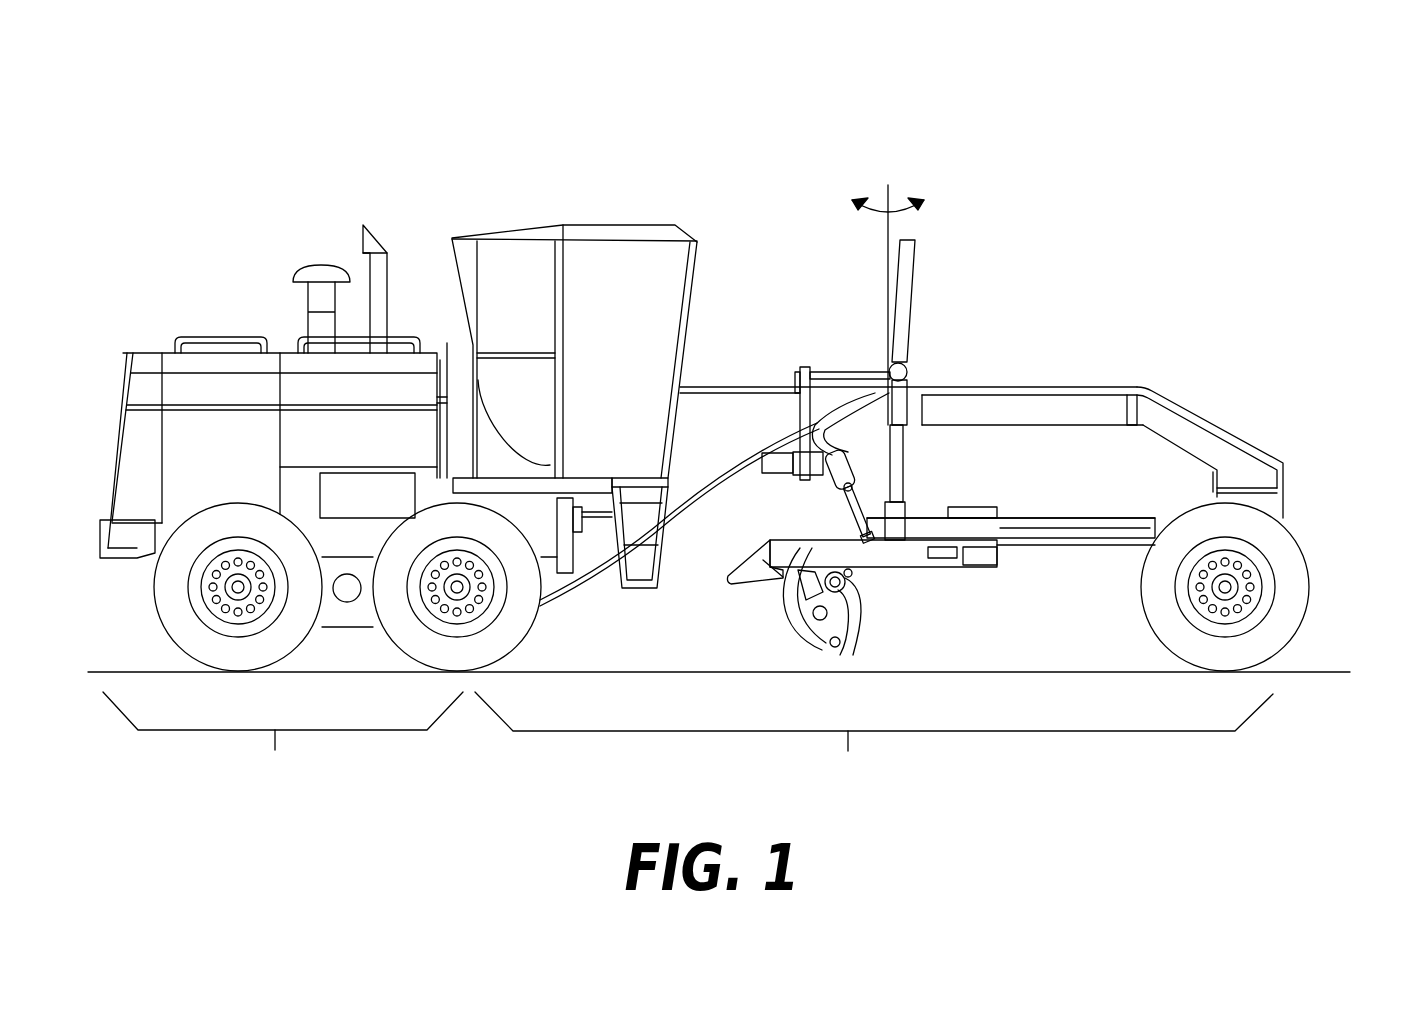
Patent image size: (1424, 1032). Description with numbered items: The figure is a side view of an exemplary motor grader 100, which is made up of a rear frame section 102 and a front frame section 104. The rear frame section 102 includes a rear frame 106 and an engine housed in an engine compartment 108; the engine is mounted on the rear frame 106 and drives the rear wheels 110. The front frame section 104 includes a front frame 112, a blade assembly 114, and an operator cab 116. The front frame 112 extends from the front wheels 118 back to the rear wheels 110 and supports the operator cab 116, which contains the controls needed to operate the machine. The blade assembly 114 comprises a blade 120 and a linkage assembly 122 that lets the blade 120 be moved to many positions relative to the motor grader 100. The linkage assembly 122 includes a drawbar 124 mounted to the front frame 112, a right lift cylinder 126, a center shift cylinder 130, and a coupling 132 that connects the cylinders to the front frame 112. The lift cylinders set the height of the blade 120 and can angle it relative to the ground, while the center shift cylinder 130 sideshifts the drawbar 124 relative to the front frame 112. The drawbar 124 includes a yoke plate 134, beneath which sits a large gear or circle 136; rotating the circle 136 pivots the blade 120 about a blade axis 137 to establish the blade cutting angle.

The motor grader 100 is at (1090, 220).
The rear frame section 102 is at (283, 741).
The front frame section 104 is at (874, 741).
The rear frame 106 is at (328, 600).
The engine compartment 108 is at (173, 433).
The rear wheels 110 is at (168, 607).
The front frame 112 is at (1066, 402).
The blade assembly 114 is at (942, 577).
The operator cab 116 is at (697, 263).
The front wheels 118 is at (1312, 603).
The blade 120 is at (853, 638).
The linkage assembly 122 is at (957, 489).
The drawbar 124 is at (1110, 550).
The right lift cylinder 126 is at (913, 317).
The center shift cylinder 130 is at (842, 498).
The coupling 132 is at (833, 407).
The yoke plate 134 is at (917, 530).
The circle 136 is at (950, 568).
The blade axis 137 is at (890, 190).